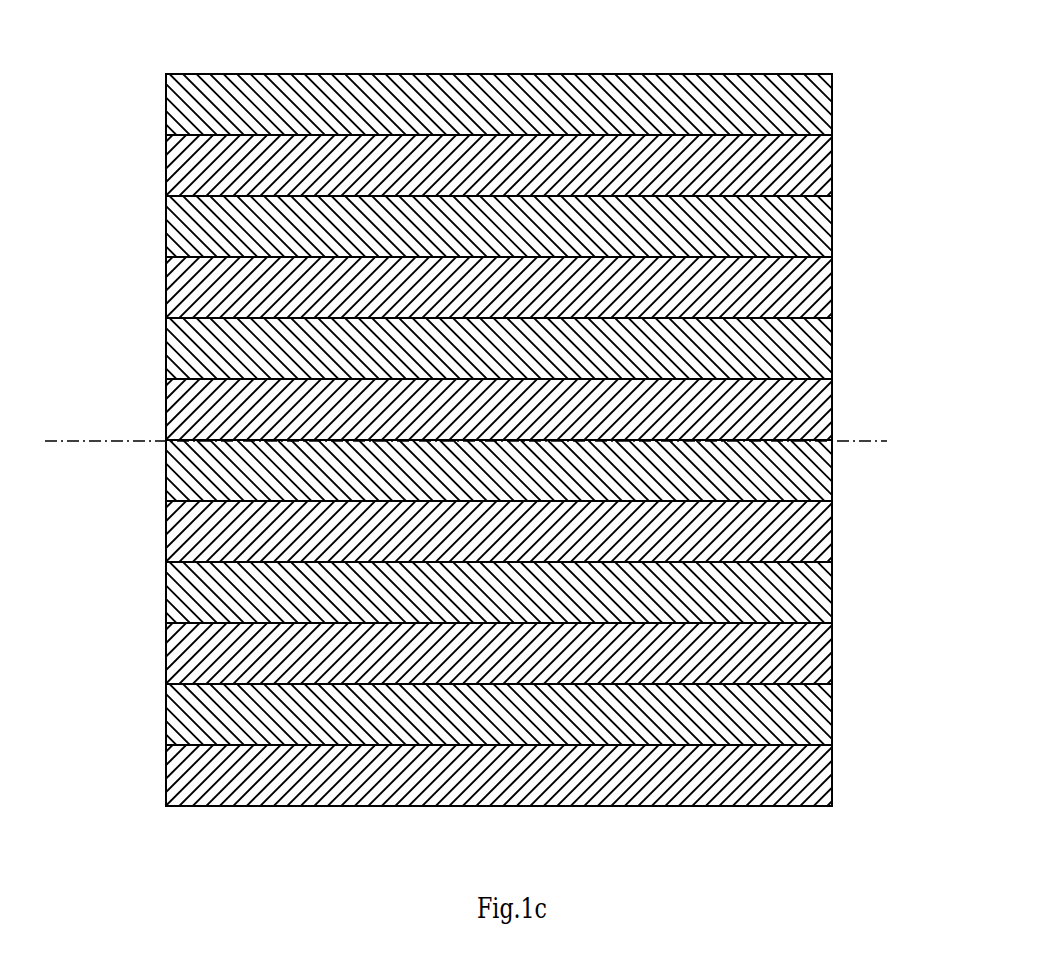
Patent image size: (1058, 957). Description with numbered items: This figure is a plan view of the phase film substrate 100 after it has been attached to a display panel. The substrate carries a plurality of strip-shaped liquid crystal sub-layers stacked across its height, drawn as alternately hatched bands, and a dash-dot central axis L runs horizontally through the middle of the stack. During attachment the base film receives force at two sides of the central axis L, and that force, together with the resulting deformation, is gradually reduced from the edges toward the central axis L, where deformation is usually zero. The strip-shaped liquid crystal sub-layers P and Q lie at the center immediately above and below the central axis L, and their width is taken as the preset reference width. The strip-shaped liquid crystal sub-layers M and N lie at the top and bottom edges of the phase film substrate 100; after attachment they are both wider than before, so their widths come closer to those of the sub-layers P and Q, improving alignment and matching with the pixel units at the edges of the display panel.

The phase film substrate 100 is at (254, 24).
The strip-shaped liquid crystal sub-layer M is at (525, 79).
The strip-shaped liquid crystal sub-layer P is at (531, 388).
The strip-shaped liquid crystal sub-layer Q is at (529, 482).
The strip-shaped liquid crystal sub-layer N is at (534, 785).
The central axis L is at (466, 427).